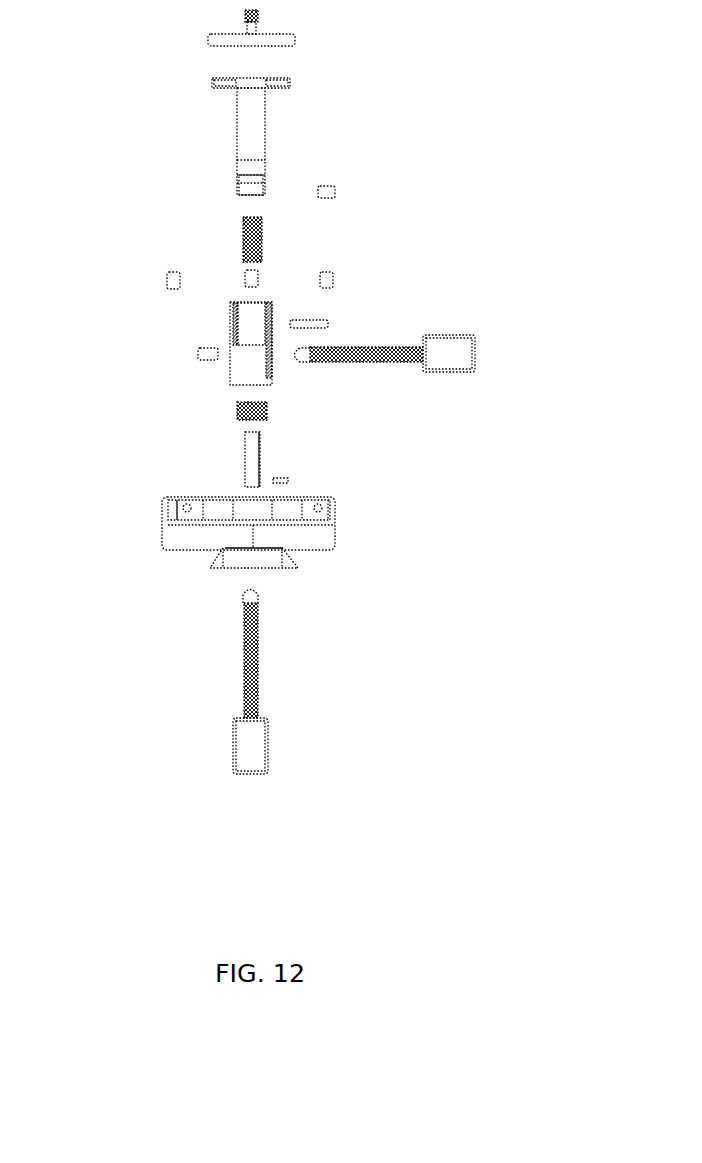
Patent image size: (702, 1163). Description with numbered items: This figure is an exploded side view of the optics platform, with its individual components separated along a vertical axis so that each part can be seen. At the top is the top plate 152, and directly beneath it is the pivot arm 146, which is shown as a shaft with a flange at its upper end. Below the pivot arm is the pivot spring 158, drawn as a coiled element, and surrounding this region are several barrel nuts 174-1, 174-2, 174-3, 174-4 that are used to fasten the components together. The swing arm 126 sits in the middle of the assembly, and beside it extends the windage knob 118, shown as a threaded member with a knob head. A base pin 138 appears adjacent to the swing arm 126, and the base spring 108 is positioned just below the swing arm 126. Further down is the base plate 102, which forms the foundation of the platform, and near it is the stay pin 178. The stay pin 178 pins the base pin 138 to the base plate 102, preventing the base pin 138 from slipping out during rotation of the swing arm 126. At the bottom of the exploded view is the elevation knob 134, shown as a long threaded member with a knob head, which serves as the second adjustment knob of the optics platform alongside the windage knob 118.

The top plate 152 is at (292, 40).
The pivot arm 146 is at (265, 110).
The barrel nut 174-1 is at (336, 192).
The pivot spring 158 is at (262, 233).
The barrel nut 174-2 is at (245, 270).
The barrel nut 174-3 is at (165, 277).
The barrel nut 174-4 is at (198, 353).
The swing arm 126 is at (268, 378).
The base pin 138 is at (328, 325).
The windage knob 118 is at (477, 352).
The base spring 108 is at (233, 410).
The stay pin 178 is at (288, 478).
The base plate 102 is at (335, 518).
The elevation knob 134 is at (258, 652).